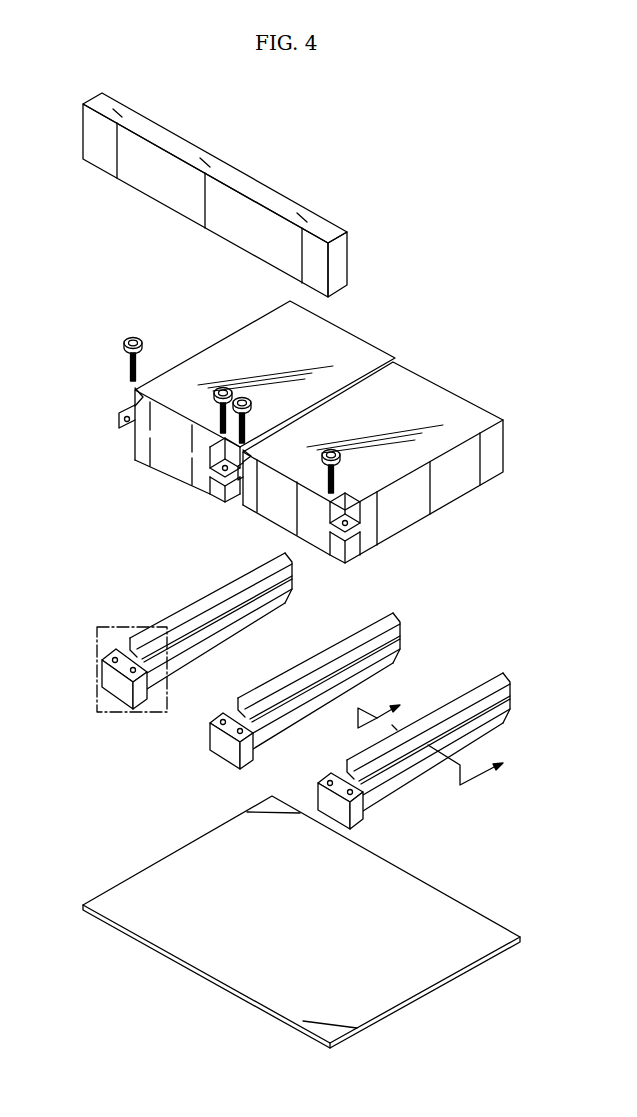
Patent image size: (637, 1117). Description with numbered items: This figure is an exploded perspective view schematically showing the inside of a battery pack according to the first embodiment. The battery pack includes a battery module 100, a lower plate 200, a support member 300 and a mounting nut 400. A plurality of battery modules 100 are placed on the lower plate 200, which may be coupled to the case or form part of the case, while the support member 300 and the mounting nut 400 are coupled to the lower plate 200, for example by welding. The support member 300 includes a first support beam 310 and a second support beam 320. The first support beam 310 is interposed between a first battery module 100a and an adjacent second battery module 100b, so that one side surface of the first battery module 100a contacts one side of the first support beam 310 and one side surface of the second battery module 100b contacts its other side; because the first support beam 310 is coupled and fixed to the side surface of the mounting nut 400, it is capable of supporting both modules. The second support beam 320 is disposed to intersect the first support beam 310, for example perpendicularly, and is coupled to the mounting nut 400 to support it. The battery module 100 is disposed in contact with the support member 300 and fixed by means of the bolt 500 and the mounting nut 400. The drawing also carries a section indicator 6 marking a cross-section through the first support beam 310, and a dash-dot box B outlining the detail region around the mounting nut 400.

The battery module 100 is at (466, 306).
The first battery module 100a is at (352, 348).
The second battery module 100b is at (433, 393).
The lower plate 200 is at (182, 865).
The support member 300 is at (422, 588).
The first support beam 310 is at (188, 610).
The second support beam 320 is at (266, 198).
The mounting nut 400 is at (115, 685).
The bolt 500 is at (123, 340).
The section line 6 is at (446, 734).
The detail region B is at (97, 662).